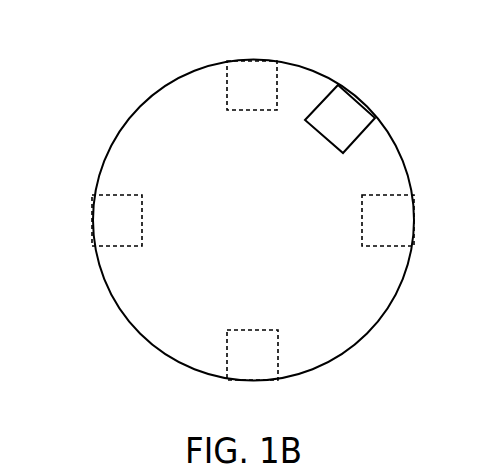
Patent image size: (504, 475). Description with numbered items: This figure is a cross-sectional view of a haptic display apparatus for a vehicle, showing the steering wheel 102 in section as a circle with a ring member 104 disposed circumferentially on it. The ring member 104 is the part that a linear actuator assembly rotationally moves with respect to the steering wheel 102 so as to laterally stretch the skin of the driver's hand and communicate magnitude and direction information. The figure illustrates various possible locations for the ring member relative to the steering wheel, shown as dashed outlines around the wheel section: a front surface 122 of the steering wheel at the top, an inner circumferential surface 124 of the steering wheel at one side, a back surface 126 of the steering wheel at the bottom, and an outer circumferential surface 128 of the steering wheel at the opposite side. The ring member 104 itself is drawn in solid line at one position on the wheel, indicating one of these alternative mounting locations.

The steering wheel 102 is at (274, 238).
The ring member 104 is at (344, 107).
The front surface of the steering wheel 122 is at (250, 70).
The inner circumferential surface of the steering wheel 124 is at (102, 220).
The back surface of the steering wheel 126 is at (257, 372).
The outer circumferential surface of the steering wheel 128 is at (402, 229).